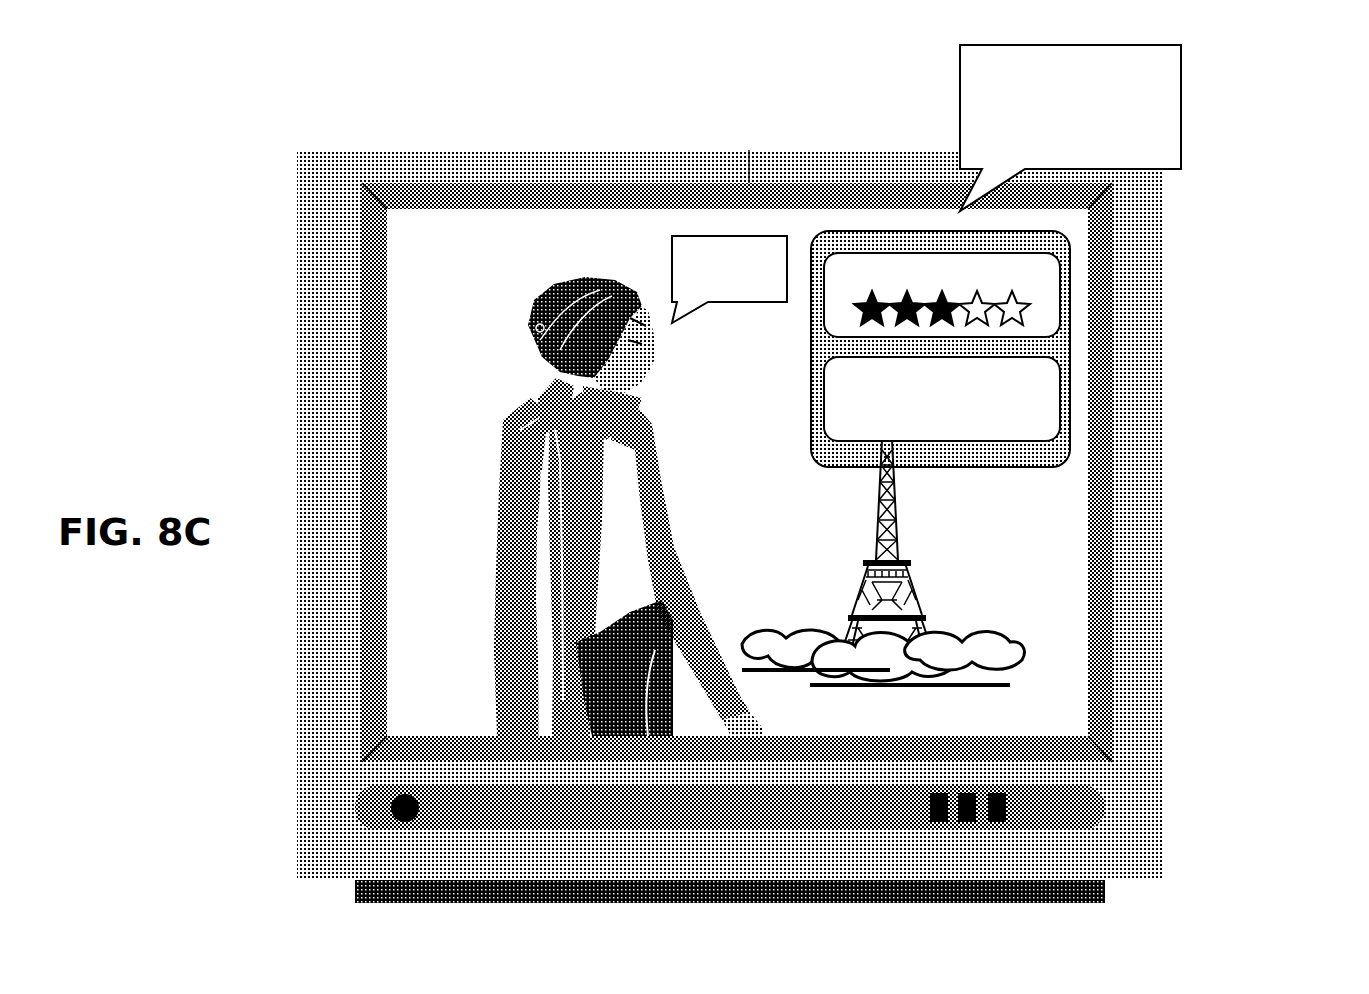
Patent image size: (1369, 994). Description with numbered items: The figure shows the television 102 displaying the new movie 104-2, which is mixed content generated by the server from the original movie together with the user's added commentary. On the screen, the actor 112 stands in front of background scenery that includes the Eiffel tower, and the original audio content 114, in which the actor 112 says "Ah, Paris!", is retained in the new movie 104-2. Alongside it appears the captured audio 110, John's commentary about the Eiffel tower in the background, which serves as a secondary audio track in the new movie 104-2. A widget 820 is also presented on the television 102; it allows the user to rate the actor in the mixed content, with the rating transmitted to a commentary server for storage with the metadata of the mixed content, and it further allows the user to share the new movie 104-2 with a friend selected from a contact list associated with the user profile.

The television 102 is at (1163, 633).
The new movie 104-2 is at (1060, 516).
The captured audio 110 is at (1181, 108).
The actor 112 is at (591, 278).
The original audio content 114 is at (708, 236).
The widget 820 is at (1070, 322).